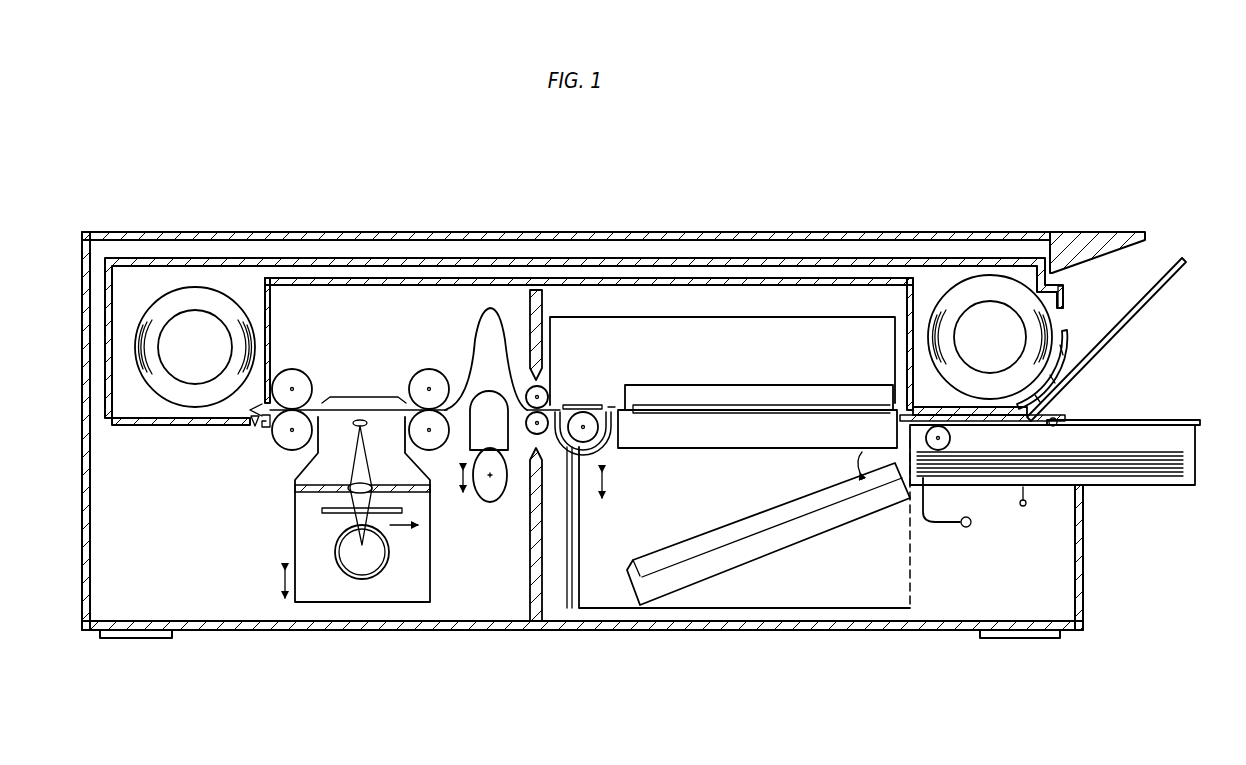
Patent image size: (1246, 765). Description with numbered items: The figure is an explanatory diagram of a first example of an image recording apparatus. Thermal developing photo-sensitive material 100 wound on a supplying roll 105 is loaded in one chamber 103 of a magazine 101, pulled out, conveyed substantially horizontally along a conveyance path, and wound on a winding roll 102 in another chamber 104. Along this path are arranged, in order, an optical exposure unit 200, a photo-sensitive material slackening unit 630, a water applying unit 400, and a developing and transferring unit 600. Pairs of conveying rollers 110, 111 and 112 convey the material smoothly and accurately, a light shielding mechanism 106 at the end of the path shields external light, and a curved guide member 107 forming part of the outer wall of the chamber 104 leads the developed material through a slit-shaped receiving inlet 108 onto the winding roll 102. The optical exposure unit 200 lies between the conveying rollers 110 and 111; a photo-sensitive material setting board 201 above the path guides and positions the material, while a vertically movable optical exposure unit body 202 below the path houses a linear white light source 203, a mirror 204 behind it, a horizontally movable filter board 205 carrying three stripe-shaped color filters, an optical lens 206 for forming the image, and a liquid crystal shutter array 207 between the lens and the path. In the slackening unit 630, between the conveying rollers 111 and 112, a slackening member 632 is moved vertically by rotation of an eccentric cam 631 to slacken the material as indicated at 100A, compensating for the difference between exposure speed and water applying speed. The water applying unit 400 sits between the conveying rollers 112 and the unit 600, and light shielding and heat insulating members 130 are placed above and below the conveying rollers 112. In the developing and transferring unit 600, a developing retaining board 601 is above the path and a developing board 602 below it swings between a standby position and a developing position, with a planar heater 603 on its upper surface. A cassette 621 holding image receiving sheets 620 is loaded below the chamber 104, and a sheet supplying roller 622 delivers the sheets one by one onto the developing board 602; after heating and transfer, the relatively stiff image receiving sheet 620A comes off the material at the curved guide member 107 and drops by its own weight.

The thermal developing photo-sensitive material 100 is at (240, 292).
The slackened photo-sensitive material 100A is at (471, 326).
The magazine 101 is at (578, 256).
The winding roll 102 is at (990, 320).
The chamber 103 is at (133, 272).
The chamber 104 is at (906, 268).
The supplying roll 105 is at (190, 322).
The light shielding mechanism 106 is at (918, 411).
The curved guide member 107 is at (1063, 348).
The photo-sensitive material receiving inlet 108 is at (1063, 292).
The conveying rollers 110 is at (292, 368).
The conveying rollers 111 is at (428, 368).
The conveying rollers 112 is at (547, 388).
The light shielding and heat insulating members 130 is at (531, 595).
The optical exposure unit 200 is at (402, 608).
The photo-sensitive material setting board 201 is at (325, 404).
The optical exposure unit body 202 is at (432, 562).
The linear white light source 203 is at (356, 582).
The mirror 204 is at (380, 562).
The filter board 205 is at (331, 514).
The optical lens 206 is at (368, 487).
The liquid crystal shutter array 207 is at (365, 427).
The water applying unit 400 is at (594, 398).
The developing and transferring unit 600 is at (820, 558).
The developing retaining board 601 is at (775, 388).
The developing board 602 is at (646, 450).
The planar heater 603 is at (784, 502).
The image receiving sheets 620 is at (1112, 442).
The image receiving sheet with transferred image 620A is at (1114, 335).
The cassette 621 is at (1105, 488).
The sheet supplying roller 622 is at (953, 438).
The photo-sensitive material slackening unit 630 is at (490, 506).
The eccentric cam 631 is at (461, 500).
The slackening member 632 is at (487, 394).